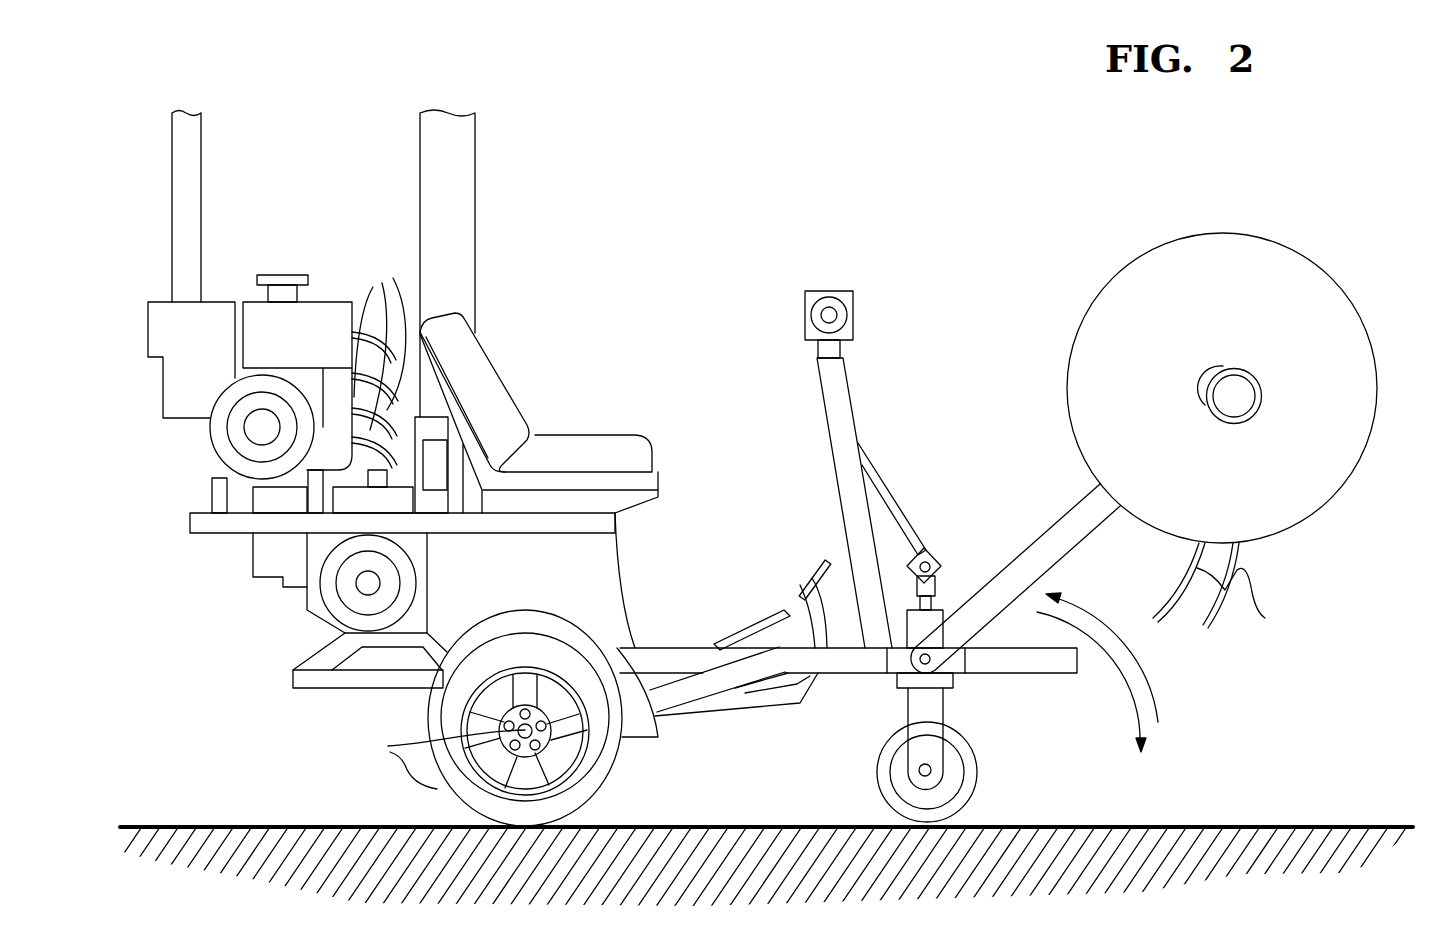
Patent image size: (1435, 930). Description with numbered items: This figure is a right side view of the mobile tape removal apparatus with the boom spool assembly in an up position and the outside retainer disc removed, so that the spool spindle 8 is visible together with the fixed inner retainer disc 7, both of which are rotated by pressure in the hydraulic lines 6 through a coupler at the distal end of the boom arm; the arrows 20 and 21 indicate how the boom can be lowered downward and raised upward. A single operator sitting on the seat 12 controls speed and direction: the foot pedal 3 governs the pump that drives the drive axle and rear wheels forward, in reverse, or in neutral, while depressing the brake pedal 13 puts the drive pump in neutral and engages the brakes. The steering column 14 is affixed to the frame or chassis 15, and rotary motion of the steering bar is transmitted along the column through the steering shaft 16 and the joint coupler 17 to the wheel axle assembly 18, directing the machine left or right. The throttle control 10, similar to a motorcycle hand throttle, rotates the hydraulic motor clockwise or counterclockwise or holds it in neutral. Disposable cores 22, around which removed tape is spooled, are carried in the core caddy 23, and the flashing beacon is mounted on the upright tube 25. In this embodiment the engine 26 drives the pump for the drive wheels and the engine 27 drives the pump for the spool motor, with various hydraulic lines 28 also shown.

The foot pedal 3 is at (745, 630).
The hydraulic lines 6 is at (1224, 590).
The fixed inner retainer disc 7 is at (1280, 270).
The spool spindle 8 is at (1242, 395).
The throttle control 10 is at (826, 296).
The seat 12 is at (580, 452).
The brake pedal 13 is at (805, 560).
The steering column 14 is at (833, 392).
The frame or chassis 15 is at (872, 663).
The steering shaft 16 is at (868, 478).
The joint coupler 17 is at (928, 549).
The wheel axle assembly 18 is at (873, 783).
The arrow 20 is at (1142, 663).
The arrow 21 is at (1130, 693).
The disposable core 22 is at (1230, 368).
The core caddy 23 is at (457, 128).
The upright tube 25 is at (193, 160).
The engine 26 is at (333, 597).
The engine 27 is at (218, 428).
The hydraulic lines 28 is at (379, 357).